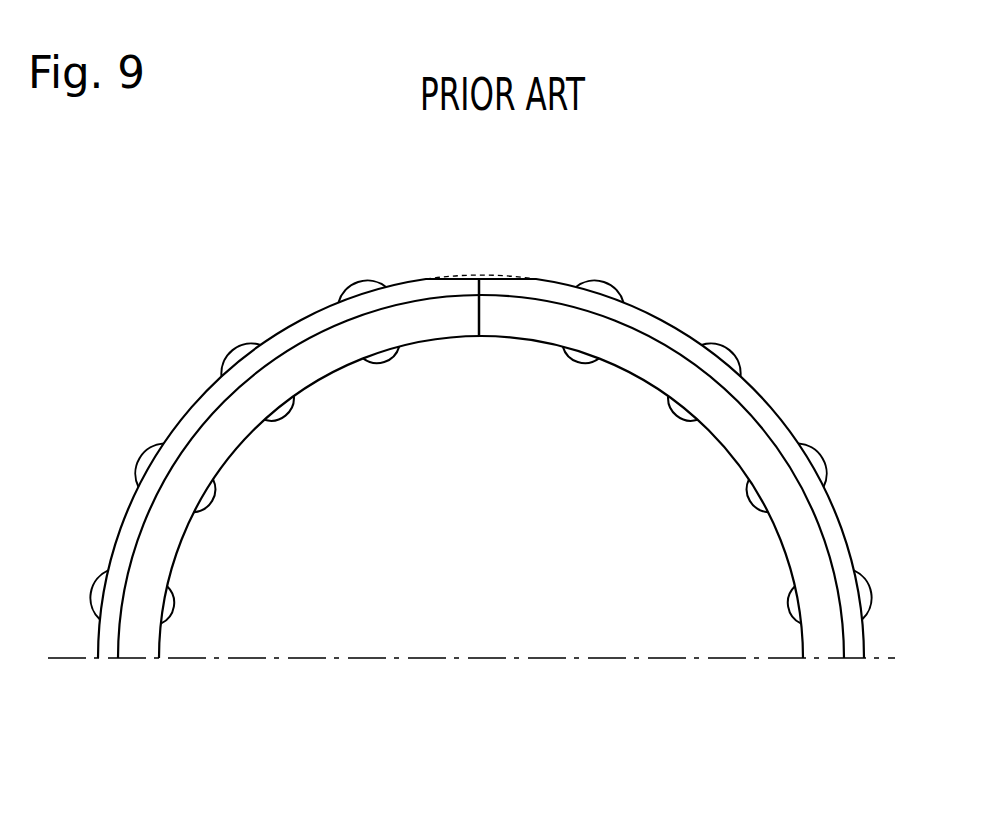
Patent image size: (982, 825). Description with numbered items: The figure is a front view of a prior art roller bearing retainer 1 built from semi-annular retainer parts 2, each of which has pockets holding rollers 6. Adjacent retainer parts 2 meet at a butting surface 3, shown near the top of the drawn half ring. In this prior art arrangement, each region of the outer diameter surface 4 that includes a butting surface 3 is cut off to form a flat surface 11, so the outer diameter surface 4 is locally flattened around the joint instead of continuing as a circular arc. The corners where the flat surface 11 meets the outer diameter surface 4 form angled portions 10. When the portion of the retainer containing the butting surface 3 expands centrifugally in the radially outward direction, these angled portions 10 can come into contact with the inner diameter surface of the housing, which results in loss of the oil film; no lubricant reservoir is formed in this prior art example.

The roller bearing retainer 1 is at (480, 415).
The semi-annular retainer part 2 is at (290, 338).
The butting surface 3 is at (479, 322).
The outer diameter surface 4 is at (190, 412).
The rollers 6 is at (360, 288).
The angled portions 10 is at (475, 287).
The flat surface 11 is at (518, 280).